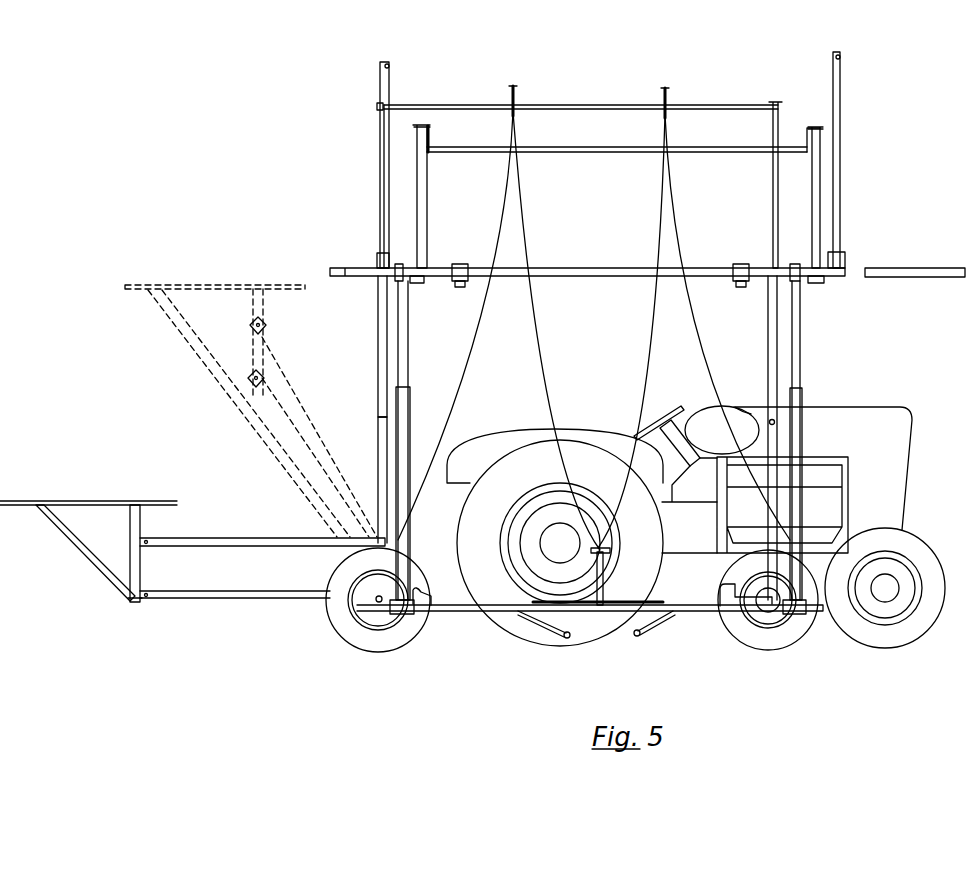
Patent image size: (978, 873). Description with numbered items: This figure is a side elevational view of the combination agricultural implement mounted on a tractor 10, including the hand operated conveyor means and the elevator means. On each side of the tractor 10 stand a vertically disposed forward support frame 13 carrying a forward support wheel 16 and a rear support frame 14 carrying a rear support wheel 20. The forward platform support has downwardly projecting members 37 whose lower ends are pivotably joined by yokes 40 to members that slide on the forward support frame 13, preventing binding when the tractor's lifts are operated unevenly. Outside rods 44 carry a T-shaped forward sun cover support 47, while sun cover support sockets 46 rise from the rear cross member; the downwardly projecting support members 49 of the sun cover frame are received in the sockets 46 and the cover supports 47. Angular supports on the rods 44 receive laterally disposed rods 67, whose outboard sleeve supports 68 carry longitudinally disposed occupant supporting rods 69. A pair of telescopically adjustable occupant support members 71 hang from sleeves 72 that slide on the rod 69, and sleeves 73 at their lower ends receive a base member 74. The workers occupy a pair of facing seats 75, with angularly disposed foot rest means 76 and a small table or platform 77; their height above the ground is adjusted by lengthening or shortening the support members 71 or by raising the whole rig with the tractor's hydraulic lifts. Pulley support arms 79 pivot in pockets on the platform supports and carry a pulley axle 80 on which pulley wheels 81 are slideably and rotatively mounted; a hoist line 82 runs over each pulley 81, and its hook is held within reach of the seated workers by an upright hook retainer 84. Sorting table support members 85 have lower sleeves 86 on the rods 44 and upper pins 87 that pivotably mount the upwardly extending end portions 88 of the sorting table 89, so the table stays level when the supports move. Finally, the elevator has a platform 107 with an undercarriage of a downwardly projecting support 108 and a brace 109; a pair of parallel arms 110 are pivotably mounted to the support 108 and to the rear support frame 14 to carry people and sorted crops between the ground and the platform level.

The tractor 10 is at (880, 408).
The forward support frame 13 is at (768, 460).
The rear support frame 14 is at (378, 438).
The forward support wheel 16 is at (762, 642).
The rear support wheel 20 is at (340, 618).
The downwardly projecting member 37 is at (378, 324).
The yoke 40 is at (770, 423).
The outside rod 44 is at (918, 268).
The sun cover support socket 46 is at (377, 260).
The forward sun cover support 47 is at (840, 262).
The support member 49 is at (380, 86).
The laterally disposed rod 67 is at (462, 287).
The sleeve support 68 is at (470, 262).
The occupant supporting rod 69 is at (572, 268).
The occupant support member 71 is at (404, 428).
The sleeve 72 is at (399, 264).
The sleeve 73 is at (404, 614).
The base member 74 is at (690, 612).
The seat 75 is at (432, 606).
The foot rest means 76 is at (555, 640).
The table or platform 77 is at (612, 600).
The pulley support arm 79 is at (380, 150).
The pulley axle 80 is at (562, 105).
The pulley wheel 81 is at (515, 96).
The hoist line 82 is at (645, 390).
The upright hook retainer 84 is at (604, 572).
The sorting table support member 85 is at (424, 225).
The sleeve 86 is at (418, 283).
The pin 87 is at (432, 127).
The upwardly extending end portion 88 is at (431, 140).
The sorting table 89 is at (553, 150).
The platform 107 is at (44, 501).
The downwardly projecting support 108 is at (140, 530).
The brace 109 is at (92, 556).
The arm 110 is at (176, 542).